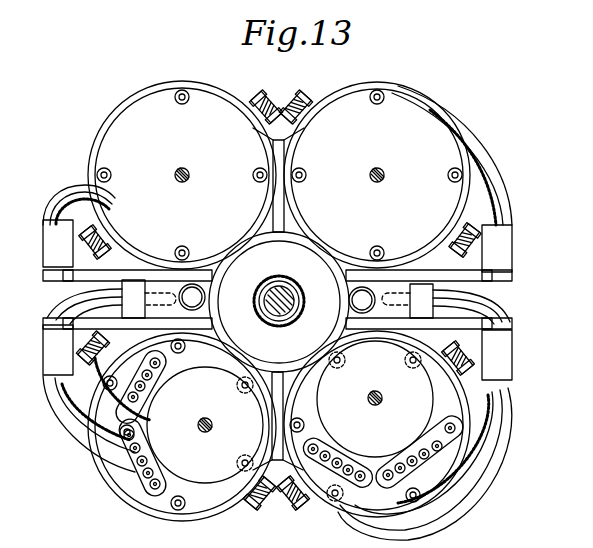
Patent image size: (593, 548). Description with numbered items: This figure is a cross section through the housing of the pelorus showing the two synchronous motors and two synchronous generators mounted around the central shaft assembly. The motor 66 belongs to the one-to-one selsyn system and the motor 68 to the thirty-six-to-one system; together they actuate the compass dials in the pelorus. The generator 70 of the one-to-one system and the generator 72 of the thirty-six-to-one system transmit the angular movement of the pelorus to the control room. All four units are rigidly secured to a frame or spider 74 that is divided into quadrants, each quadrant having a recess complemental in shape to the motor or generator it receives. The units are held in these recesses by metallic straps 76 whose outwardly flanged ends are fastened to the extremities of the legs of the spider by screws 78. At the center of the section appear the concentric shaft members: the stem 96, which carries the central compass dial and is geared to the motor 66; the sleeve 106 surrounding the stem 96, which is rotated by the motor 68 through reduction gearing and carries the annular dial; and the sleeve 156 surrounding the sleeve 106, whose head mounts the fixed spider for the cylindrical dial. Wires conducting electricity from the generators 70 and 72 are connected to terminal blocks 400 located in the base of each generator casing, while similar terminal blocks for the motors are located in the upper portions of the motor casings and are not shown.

The motor 66 is at (377, 175).
The motor 68 is at (182, 175).
The generator 70 is at (377, 424).
The generator 72 is at (182, 427).
The frame or spider 74 is at (279, 302).
The metallic straps 76 is at (132, 96).
The screws 78 is at (277, 78).
The stem 96 is at (288, 286).
The sleeve 106 is at (300, 303).
The sleeve 156 is at (289, 323).
The terminal blocks 400 is at (150, 403).